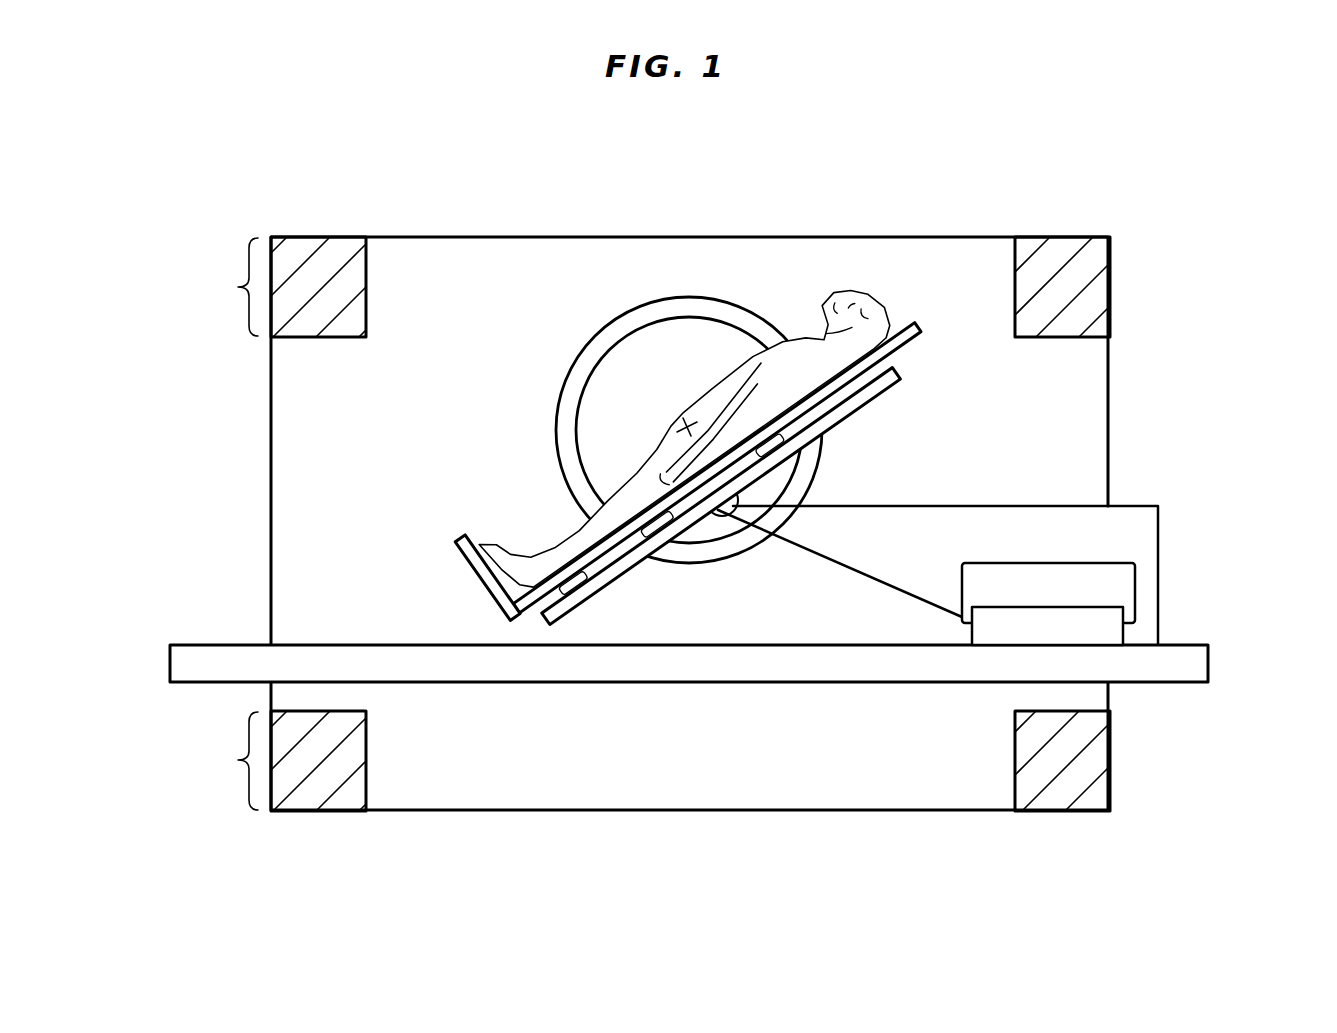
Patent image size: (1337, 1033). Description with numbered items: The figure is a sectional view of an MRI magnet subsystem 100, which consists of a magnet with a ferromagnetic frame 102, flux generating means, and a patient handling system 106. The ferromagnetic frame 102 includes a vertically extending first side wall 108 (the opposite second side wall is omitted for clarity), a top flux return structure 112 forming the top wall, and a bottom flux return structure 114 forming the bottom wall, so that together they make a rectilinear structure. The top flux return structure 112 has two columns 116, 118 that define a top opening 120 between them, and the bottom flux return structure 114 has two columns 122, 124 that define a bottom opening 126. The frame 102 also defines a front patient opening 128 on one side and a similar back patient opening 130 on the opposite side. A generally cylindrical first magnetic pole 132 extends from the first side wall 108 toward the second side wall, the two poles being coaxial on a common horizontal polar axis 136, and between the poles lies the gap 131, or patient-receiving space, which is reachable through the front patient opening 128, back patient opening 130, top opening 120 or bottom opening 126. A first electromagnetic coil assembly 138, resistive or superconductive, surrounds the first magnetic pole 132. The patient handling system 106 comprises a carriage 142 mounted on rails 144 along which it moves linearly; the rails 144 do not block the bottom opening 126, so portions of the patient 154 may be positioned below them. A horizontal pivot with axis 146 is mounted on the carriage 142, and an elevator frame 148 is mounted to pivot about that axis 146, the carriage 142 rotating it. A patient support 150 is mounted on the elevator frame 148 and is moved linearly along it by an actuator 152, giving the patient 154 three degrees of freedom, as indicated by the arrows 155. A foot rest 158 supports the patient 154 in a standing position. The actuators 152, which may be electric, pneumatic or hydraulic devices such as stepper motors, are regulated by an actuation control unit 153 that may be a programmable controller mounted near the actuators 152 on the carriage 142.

The MRI magnet subsystem 100 is at (1160, 125).
The ferromagnetic frame 102 is at (216, 213).
The patient handling system 106 is at (456, 596).
The first side wall 108 is at (435, 237).
The top flux return structure 112 is at (225, 287).
The bottom flux return structure 114 is at (227, 761).
The column 116 is at (322, 278).
The column 118 is at (1070, 282).
The top opening 120 is at (805, 215).
The column 122 is at (318, 782).
The column 124 is at (1060, 758).
The bottom opening 126 is at (570, 865).
The front patient opening 128 is at (197, 439).
The back patient opening 130 is at (1185, 440).
The gap 131 is at (723, 352).
The first magnetic pole 132 is at (655, 328).
The polar axis 136 is at (678, 424).
The first electromagnetic coil assembly 138 is at (597, 348).
The carriage 142 is at (1160, 508).
The rails 144 is at (1180, 665).
The pivot axis 146 is at (728, 513).
The elevator frame 148 is at (665, 518).
The patient support 150 is at (527, 618).
The actuators 152 is at (1118, 580).
The actuation control unit 153 is at (1105, 627).
The patient 154 is at (870, 320).
The arrows 155 is at (120, 574).
The foot rest 158 is at (503, 612).